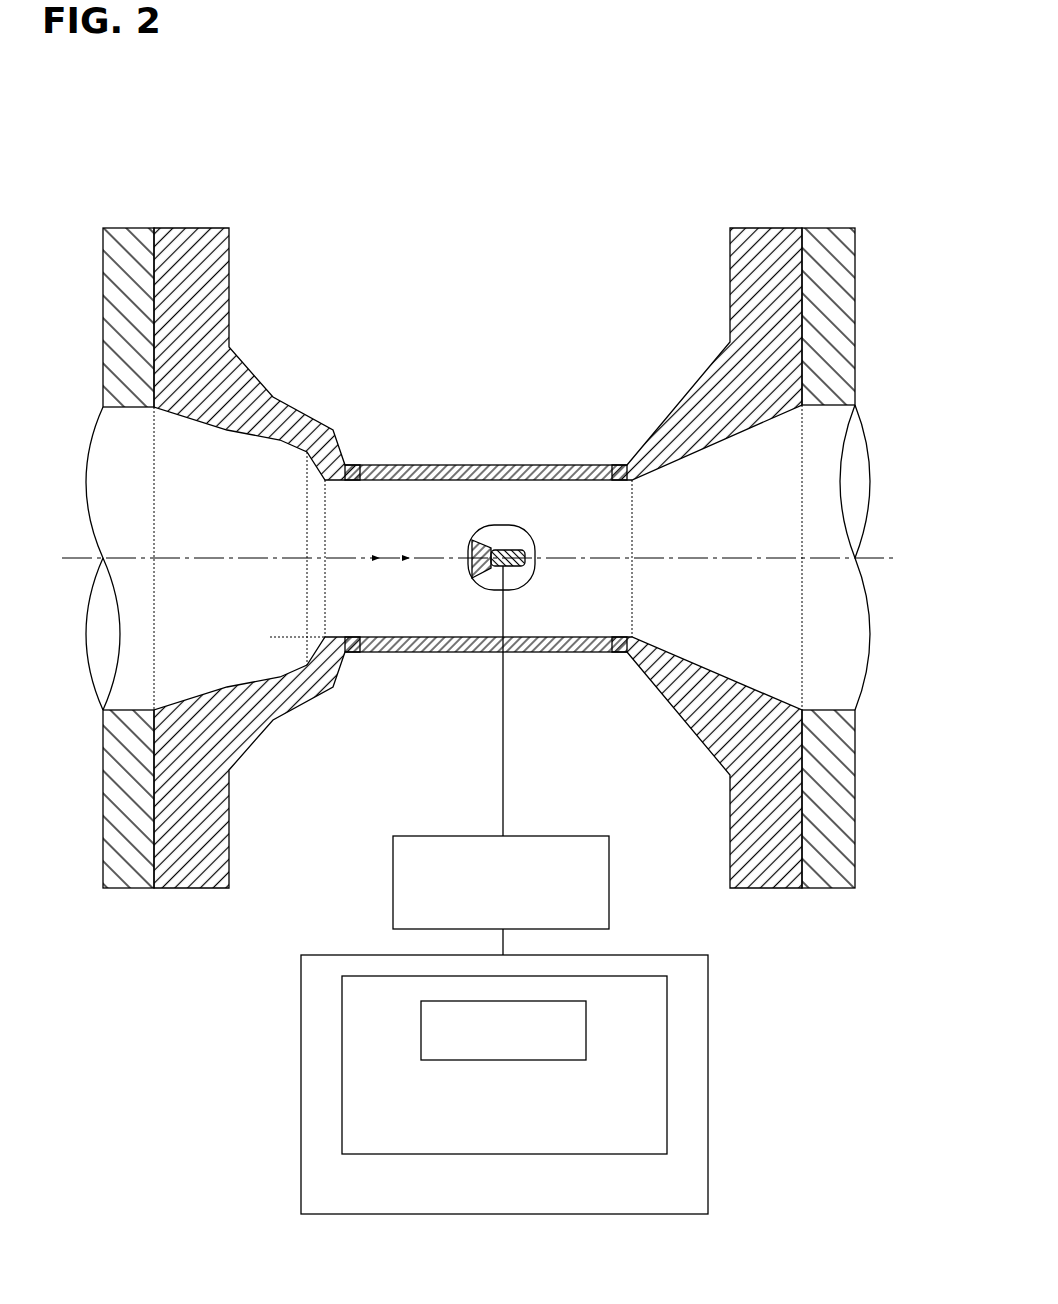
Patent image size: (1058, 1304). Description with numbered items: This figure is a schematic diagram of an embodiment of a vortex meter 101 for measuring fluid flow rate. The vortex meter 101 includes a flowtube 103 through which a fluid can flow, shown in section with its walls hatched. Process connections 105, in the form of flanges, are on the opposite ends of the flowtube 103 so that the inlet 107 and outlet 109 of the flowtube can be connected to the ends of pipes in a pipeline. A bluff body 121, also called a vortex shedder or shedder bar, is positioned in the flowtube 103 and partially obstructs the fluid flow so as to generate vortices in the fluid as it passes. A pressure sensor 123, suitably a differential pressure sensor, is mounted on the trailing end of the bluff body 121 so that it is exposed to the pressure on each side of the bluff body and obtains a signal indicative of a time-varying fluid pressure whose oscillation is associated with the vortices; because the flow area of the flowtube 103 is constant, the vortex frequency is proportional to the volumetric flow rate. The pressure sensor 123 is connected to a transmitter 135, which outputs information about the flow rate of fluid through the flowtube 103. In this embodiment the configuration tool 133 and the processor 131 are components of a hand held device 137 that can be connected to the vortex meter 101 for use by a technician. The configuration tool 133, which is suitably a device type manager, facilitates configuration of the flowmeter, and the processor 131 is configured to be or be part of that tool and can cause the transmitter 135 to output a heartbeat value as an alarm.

The vortex meter 101 is at (700, 128).
The flowtube 103 is at (367, 464).
The process connections 105 is at (153, 230).
The inlet 107 is at (130, 504).
The outlet 109 is at (812, 470).
The bluff body 121 is at (474, 540).
The pressure sensor 123 is at (504, 553).
The processor 131 is at (586, 1050).
The configuration tool 133 is at (668, 1028).
The transmitter 135 is at (393, 881).
The hand held device 137 is at (301, 1037).